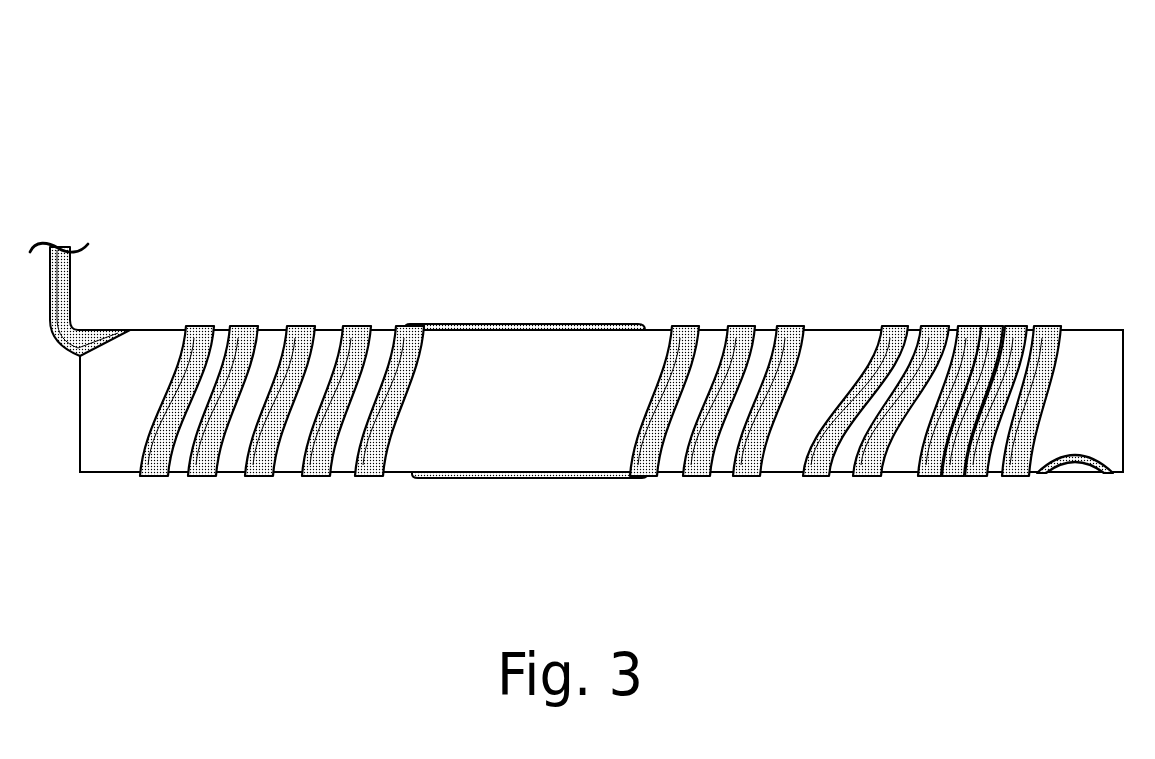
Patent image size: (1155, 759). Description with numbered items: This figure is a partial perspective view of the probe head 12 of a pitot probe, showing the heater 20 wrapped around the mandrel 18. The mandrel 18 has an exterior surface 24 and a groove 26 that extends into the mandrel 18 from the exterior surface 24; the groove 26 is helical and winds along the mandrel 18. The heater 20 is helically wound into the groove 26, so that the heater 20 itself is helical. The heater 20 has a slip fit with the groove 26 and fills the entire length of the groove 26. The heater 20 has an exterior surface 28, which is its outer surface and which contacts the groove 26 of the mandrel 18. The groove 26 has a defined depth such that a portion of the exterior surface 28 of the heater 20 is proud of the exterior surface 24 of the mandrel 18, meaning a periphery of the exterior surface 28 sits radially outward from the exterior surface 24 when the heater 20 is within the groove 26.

The probe head 12 is at (219, 108).
The mandrel 18 is at (463, 366).
The heater 20 is at (190, 348).
The exterior surface 24 is at (560, 368).
The groove 26 is at (234, 375).
The exterior surface 28 is at (281, 366).